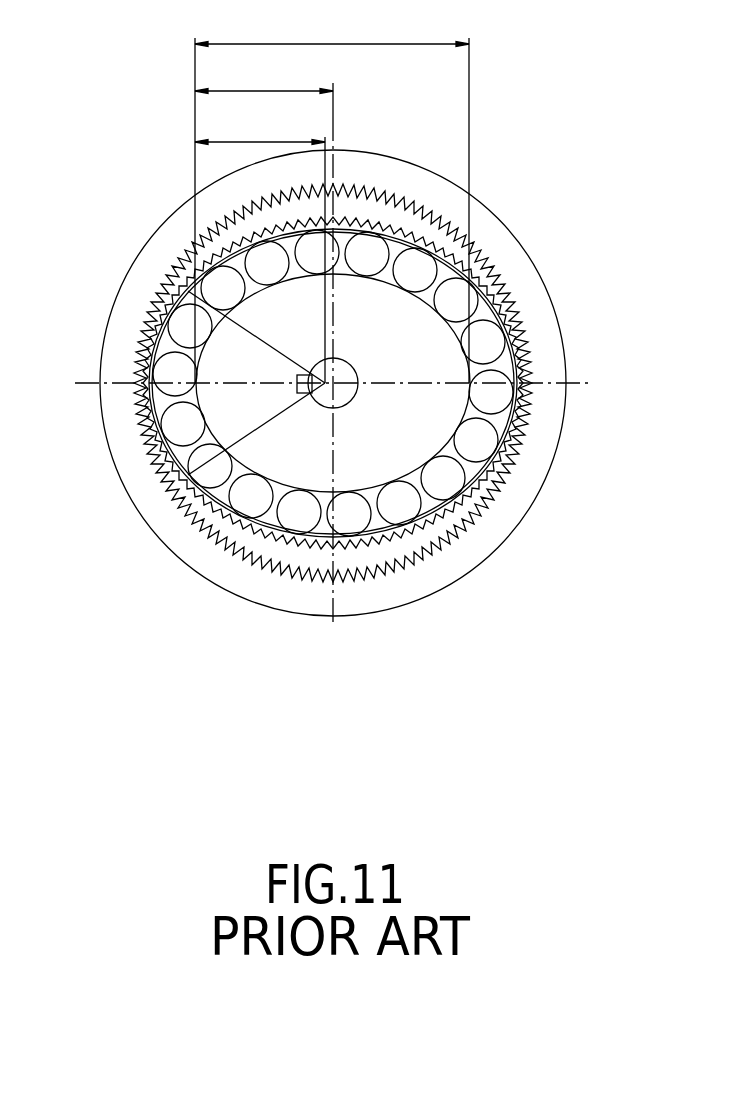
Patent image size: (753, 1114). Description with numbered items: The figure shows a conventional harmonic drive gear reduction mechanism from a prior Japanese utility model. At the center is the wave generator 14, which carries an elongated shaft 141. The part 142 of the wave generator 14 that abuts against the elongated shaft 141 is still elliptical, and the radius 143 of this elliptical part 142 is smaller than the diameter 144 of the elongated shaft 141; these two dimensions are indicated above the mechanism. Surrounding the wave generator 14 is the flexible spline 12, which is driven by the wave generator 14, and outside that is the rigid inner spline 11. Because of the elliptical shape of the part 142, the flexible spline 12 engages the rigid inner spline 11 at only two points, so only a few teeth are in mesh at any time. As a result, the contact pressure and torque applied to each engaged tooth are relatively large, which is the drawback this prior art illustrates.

The rigid inner spline 11 is at (485, 220).
The flexible spline 12 is at (305, 383).
The wave generator 14 is at (432, 420).
The elongated shaft 141 is at (332, 198).
The elliptical part 142 is at (143, 425).
The radius 143 is at (260, 248).
The diameter 144 is at (264, 77).